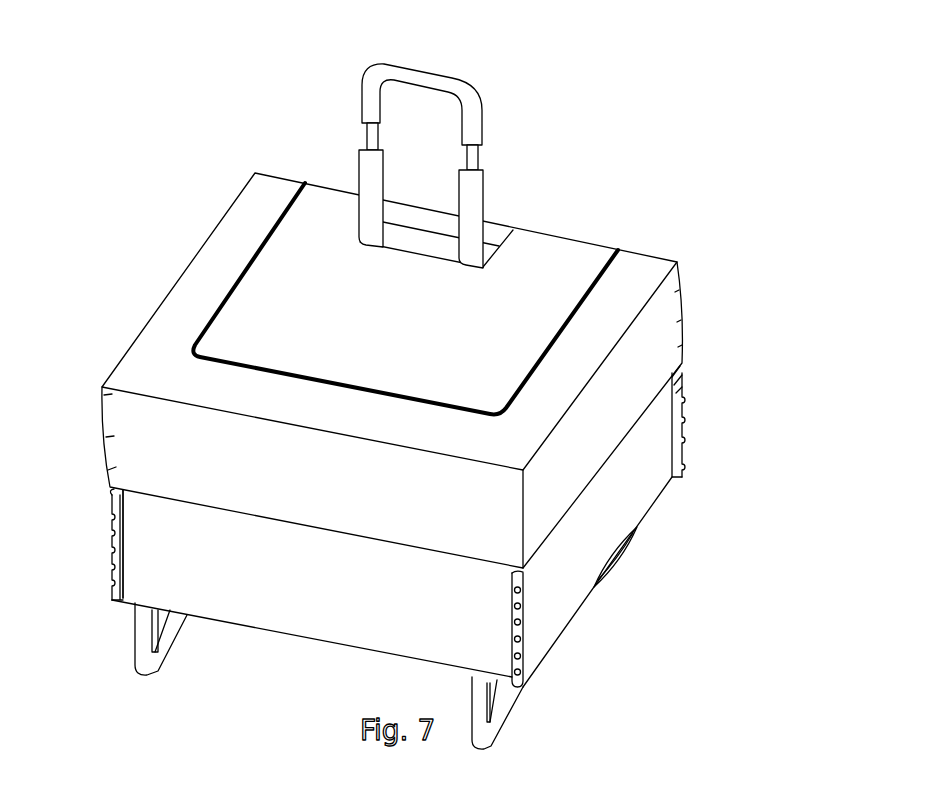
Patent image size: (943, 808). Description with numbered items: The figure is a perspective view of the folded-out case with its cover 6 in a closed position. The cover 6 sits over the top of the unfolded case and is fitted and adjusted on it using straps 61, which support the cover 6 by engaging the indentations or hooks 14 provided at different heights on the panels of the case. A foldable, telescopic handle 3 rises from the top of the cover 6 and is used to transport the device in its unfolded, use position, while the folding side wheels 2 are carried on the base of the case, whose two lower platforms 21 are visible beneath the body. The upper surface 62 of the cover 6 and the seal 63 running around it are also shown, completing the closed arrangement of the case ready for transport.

The side wheels 2 is at (603, 580).
The telescopic handle 3 is at (448, 80).
The cover 6 is at (426, 367).
The indentations or hooks 14 is at (111, 567).
The lower platforms 21 is at (498, 707).
The straps 61 is at (364, 527).
The lid top surface 62 is at (547, 272).
The seal 63 is at (598, 268).